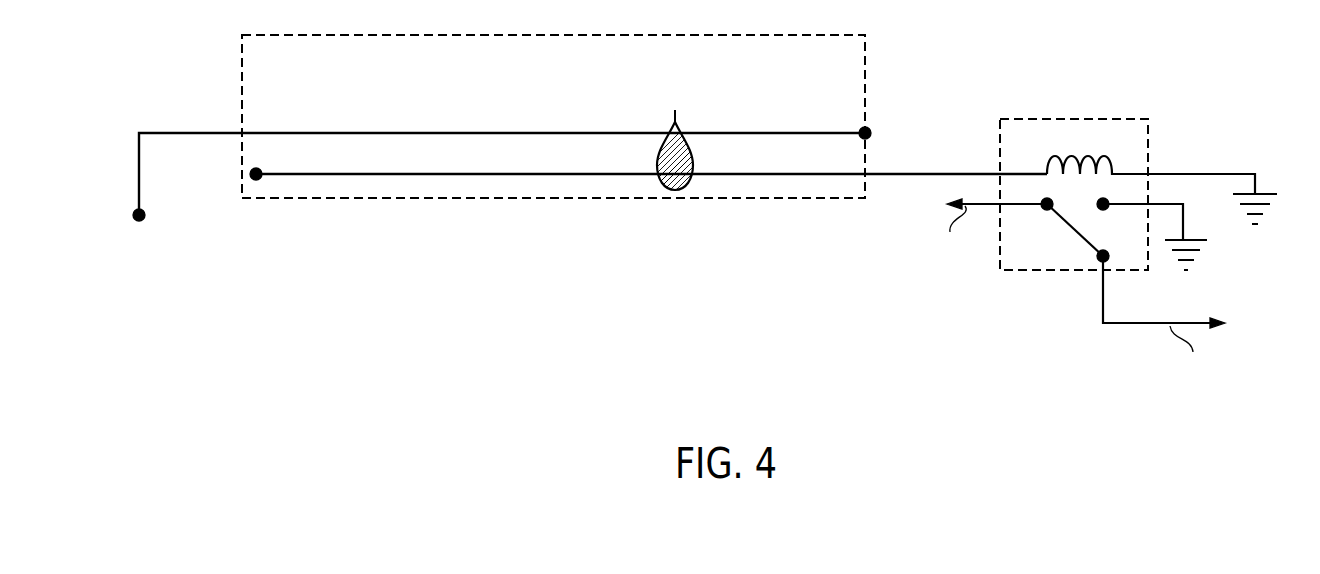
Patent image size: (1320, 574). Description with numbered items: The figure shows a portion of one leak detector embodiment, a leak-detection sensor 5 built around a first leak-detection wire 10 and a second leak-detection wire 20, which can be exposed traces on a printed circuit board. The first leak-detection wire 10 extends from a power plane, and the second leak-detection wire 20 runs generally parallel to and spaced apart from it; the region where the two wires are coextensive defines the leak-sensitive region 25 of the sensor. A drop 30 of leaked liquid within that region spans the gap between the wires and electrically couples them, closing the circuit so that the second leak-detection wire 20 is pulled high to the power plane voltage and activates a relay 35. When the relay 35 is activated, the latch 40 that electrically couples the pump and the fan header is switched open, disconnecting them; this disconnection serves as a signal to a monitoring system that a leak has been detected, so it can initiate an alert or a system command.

The liquid detection system 5 is at (664, 274).
The first leak-detection wire 10 is at (192, 132).
The second leak-detection wire 20 is at (337, 176).
The sensing region 25 is at (467, 200).
The drop of leaked liquid 30 is at (668, 125).
The relay 35 is at (1102, 118).
The latch 40 is at (1077, 232).